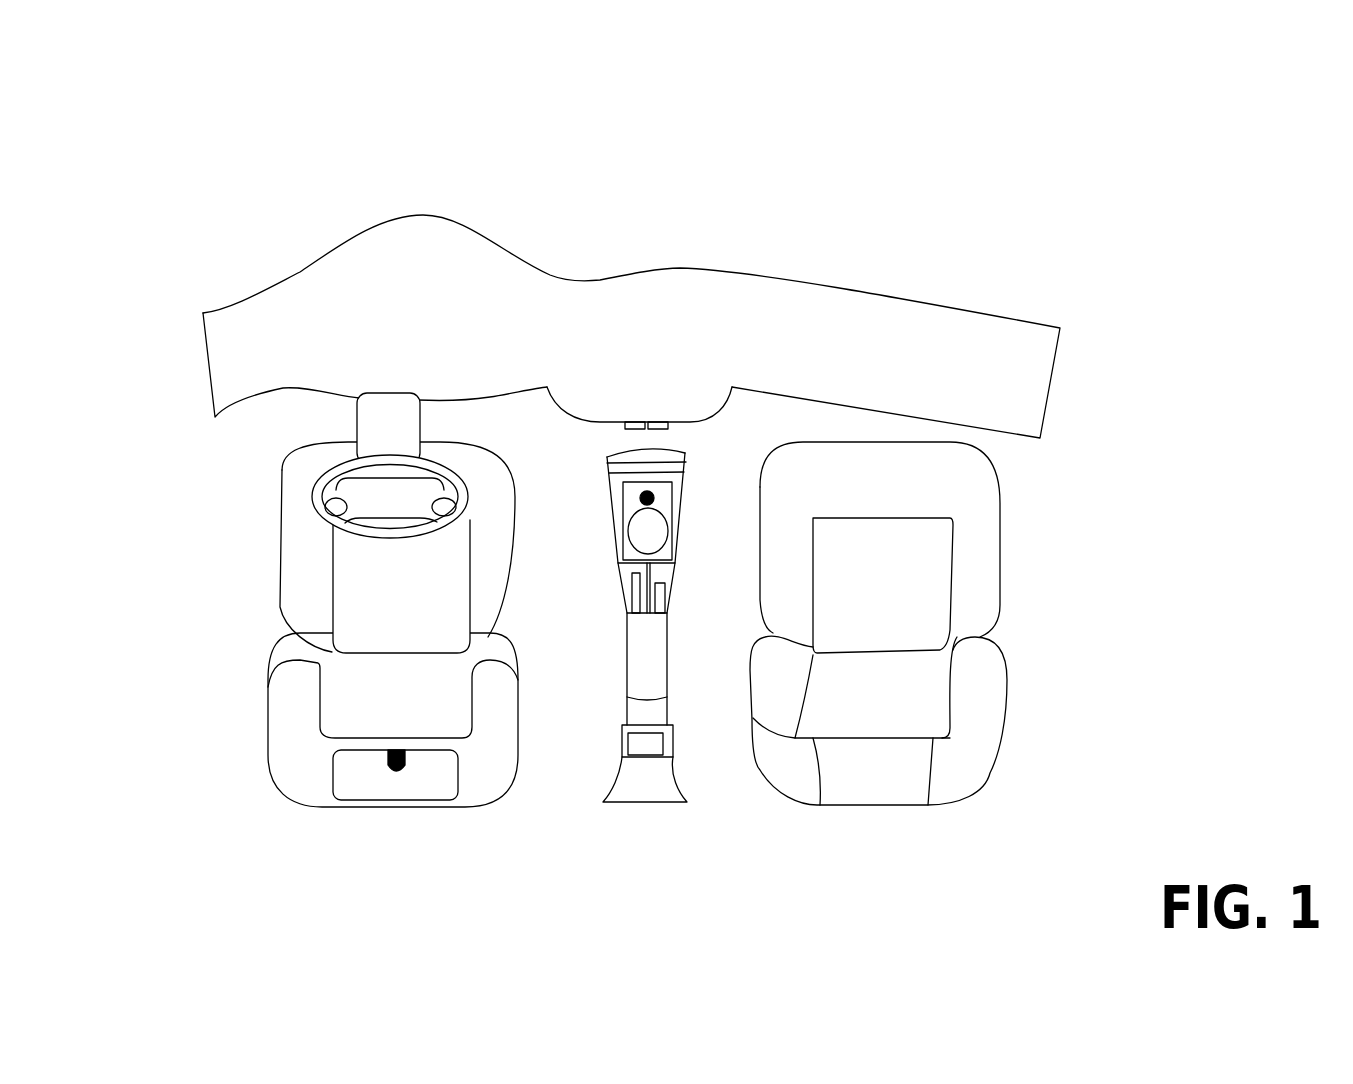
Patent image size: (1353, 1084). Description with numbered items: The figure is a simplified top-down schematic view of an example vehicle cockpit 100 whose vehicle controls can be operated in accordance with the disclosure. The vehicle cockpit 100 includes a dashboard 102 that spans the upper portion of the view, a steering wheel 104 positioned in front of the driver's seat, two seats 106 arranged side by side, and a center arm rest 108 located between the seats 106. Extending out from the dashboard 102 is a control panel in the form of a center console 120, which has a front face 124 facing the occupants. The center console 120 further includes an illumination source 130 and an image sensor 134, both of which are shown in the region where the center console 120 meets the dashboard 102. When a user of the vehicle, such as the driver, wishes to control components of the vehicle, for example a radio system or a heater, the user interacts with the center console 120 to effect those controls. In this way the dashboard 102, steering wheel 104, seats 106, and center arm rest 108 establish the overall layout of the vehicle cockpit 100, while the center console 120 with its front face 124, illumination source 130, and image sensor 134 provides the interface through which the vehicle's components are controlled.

The vehicle cockpit 100 is at (1293, 92).
The dashboard 102 is at (958, 335).
The steering wheel 104 is at (328, 471).
The seats 106 is at (297, 588).
The center arm rest 108 is at (628, 785).
The center console 120 is at (613, 403).
The front face 124 is at (712, 428).
The illumination source 130 is at (663, 415).
The image sensor 134 is at (637, 422).